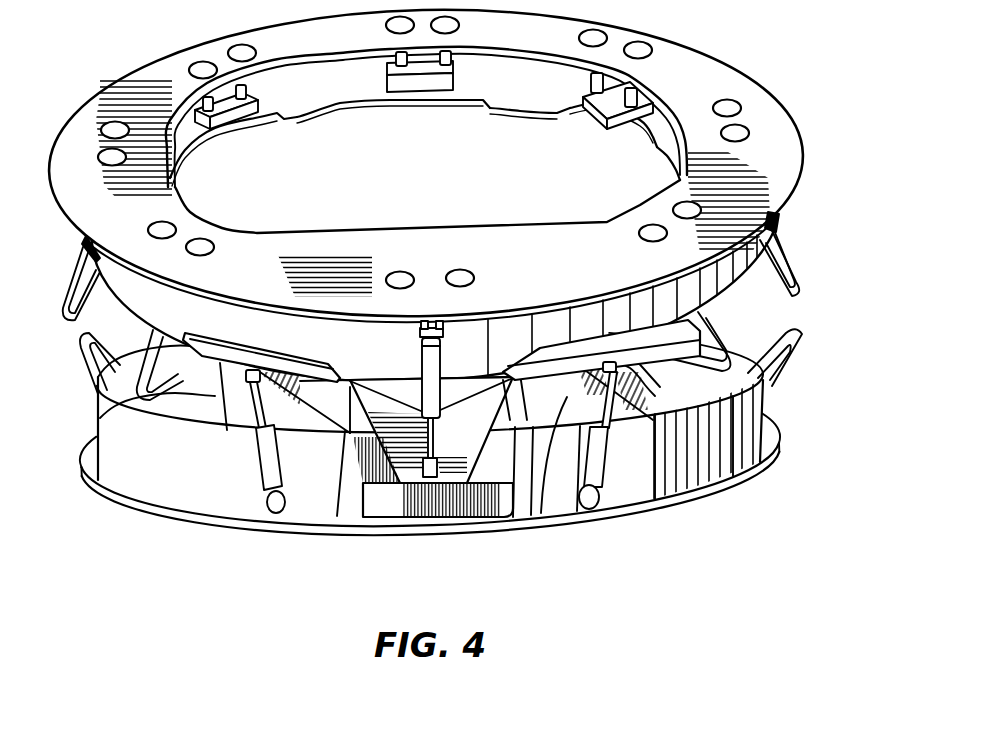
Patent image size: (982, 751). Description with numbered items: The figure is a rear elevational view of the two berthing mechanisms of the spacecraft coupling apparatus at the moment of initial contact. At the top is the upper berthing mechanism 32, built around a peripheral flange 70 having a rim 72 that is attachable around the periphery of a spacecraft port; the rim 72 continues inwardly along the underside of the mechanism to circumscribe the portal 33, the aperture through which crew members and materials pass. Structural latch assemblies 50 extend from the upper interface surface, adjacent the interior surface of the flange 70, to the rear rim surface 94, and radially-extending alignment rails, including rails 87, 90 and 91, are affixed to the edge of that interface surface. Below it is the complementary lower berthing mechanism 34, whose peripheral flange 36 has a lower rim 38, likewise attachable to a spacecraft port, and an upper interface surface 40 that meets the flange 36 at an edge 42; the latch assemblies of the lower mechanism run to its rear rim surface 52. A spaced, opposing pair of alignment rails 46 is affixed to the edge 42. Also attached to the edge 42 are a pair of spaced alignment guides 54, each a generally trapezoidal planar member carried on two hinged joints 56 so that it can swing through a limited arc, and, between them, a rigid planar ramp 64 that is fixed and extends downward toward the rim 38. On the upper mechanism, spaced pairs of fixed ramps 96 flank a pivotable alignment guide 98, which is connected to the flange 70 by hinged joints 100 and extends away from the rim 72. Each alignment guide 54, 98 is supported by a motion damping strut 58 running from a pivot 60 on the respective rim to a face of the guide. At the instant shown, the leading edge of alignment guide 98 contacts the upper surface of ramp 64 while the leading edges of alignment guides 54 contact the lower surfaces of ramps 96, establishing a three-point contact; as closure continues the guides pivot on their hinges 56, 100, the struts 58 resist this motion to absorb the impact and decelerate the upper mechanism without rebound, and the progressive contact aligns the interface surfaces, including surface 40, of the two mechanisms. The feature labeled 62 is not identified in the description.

The upper berthing mechanism 32 is at (454, 203).
The rear rim surface 94 is at (705, 57).
The rim 72 is at (773, 95).
The peripheral flange 70 is at (143, 306).
The portal 33 is at (418, 191).
The structural latch assemblies 50 is at (424, 77).
The alignment rail 87 is at (77, 270).
The alignment rails 46 is at (84, 345).
The alignment rail 91 is at (147, 340).
The alignment rail 90 is at (718, 323).
The lower berthing mechanism 34 is at (460, 446).
The lower rim 38 is at (777, 465).
The rear rim surface 52 is at (723, 497).
The upper interface surface 40 is at (117, 384).
The edge 42 is at (127, 404).
The drum shelf 62 is at (653, 387).
The peripheral flange 36 is at (308, 474).
The hinged joints 56 is at (518, 428).
The hinged joints 100 is at (364, 378).
The alignment guide 98 is at (443, 450).
The ramp 64 is at (473, 518).
The alignment guides 54 is at (220, 400).
The fixed ramps 96 is at (235, 342).
The motion damping strut 58 is at (421, 358).
The pivot 60 is at (452, 322).